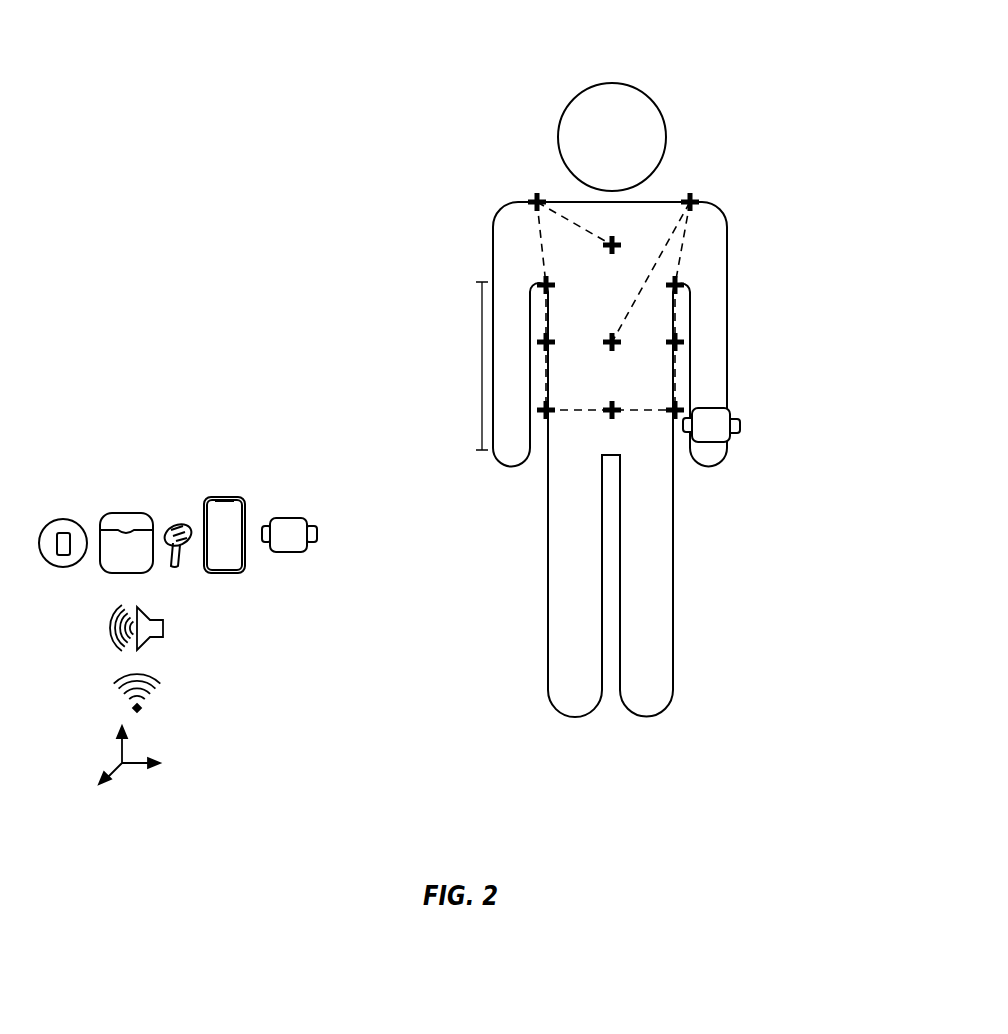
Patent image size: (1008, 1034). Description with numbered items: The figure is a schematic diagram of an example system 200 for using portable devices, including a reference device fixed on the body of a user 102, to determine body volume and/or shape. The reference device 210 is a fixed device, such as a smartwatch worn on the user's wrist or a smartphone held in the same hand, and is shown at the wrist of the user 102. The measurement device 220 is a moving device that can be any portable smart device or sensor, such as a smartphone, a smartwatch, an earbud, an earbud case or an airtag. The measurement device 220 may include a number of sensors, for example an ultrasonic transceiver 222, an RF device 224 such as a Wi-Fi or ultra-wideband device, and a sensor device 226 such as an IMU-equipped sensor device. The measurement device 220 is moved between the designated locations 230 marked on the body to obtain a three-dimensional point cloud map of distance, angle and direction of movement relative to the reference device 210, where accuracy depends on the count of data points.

The system 200 is at (58, 87).
The user 102 is at (568, 77).
The reference device 210 is at (730, 399).
The measurement device 220 is at (96, 424).
The ultrasonic transceiver 222 is at (101, 628).
The RF device 224 is at (101, 675).
The sensor device 226 is at (101, 752).
The designated locations 230 is at (604, 247).